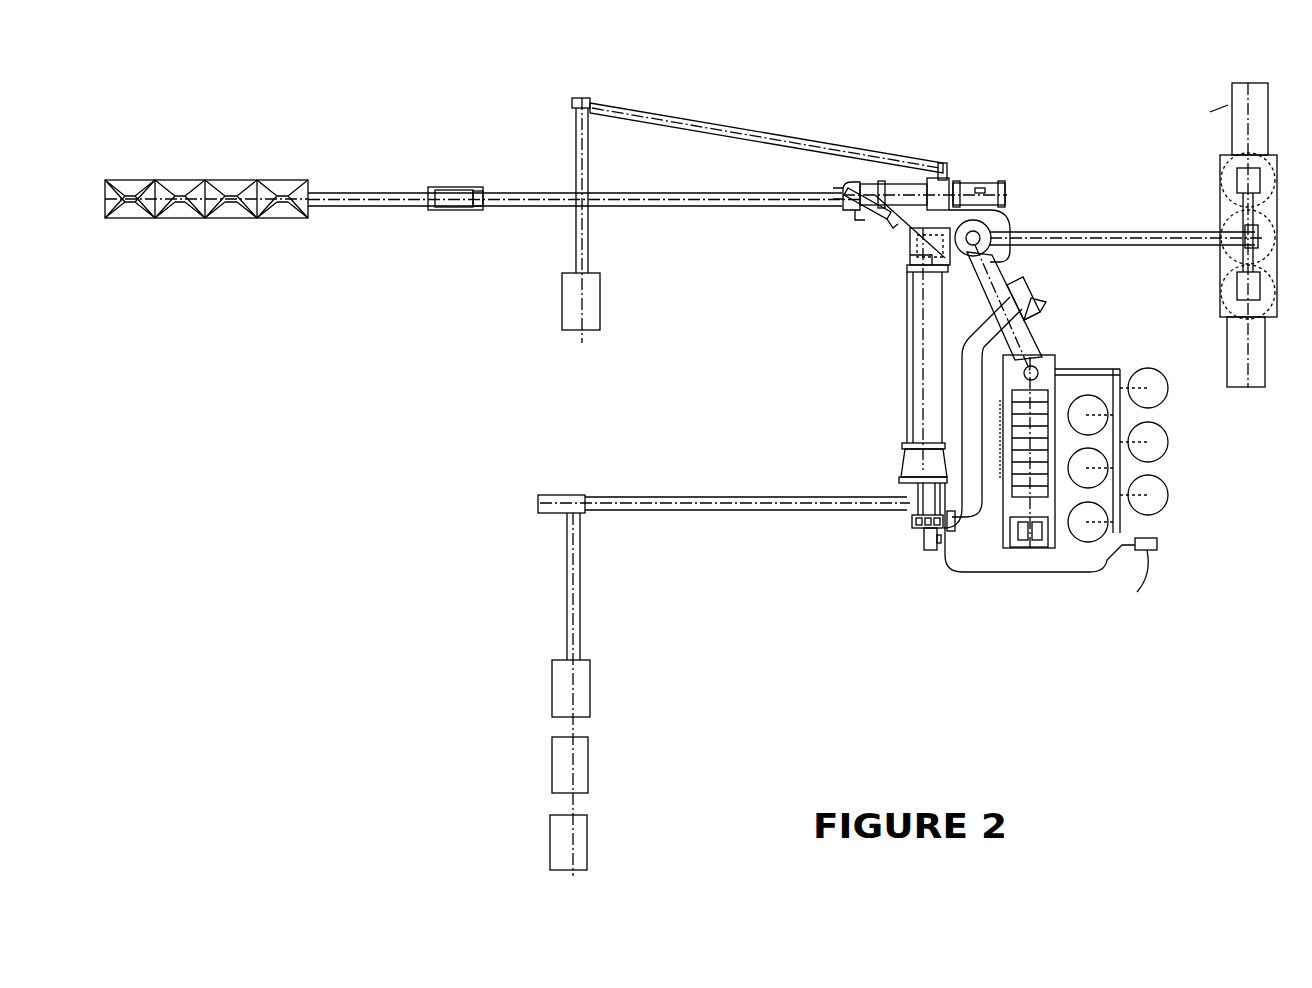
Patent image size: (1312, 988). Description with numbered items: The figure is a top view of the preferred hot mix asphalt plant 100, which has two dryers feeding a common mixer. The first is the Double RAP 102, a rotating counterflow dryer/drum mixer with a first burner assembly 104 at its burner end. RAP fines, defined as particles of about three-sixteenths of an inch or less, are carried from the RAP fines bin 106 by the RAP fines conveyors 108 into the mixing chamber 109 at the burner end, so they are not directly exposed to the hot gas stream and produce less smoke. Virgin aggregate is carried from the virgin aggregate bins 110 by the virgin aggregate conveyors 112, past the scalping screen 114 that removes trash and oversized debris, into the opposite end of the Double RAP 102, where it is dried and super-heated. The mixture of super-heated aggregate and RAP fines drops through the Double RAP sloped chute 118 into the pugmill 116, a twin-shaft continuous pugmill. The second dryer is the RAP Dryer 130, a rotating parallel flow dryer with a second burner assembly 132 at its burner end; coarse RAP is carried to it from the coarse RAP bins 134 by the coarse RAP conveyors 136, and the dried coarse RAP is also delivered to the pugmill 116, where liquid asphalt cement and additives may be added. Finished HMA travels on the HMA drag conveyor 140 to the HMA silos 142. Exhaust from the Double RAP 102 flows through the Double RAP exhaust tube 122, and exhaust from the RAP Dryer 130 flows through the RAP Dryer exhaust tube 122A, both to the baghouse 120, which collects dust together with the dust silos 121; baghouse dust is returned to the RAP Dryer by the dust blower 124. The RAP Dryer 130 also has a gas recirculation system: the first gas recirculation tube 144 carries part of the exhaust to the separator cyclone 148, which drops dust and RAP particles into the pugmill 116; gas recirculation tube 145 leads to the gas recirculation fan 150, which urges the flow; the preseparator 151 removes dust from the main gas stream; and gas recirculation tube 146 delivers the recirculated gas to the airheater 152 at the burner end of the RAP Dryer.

The hot mix asphalt plant 100 is at (985, 612).
The Double RAP 102 is at (902, 187).
The first burner assembly 104 is at (998, 185).
The RAP fines bin 106 is at (593, 302).
The RAP fines conveyors 108 is at (643, 108).
The mixing chamber 109 is at (948, 177).
The virgin aggregate bins 110 is at (232, 213).
The virgin aggregate conveyors 112 is at (358, 192).
The scalping screen 114 is at (452, 212).
The pugmill 116 is at (997, 213).
The Double RAP sloped chute 118 is at (912, 232).
The baghouse 120 is at (1052, 357).
The dust silos 121 is at (1172, 440).
The Double RAP exhaust tube 122 is at (918, 210).
The RAP Dryer exhaust tube 122A is at (958, 292).
The dust blower 124 is at (1131, 587).
The RAP Dryer 130 is at (907, 370).
The second burner assembly 132 is at (923, 552).
The coarse RAP bins 134 is at (590, 767).
The coarse RAP conveyors 136 is at (567, 577).
The HMA drag conveyor 140 is at (1182, 243).
The HMA silos 142 is at (1227, 155).
The first gas recirculation tube 144 is at (935, 270).
The gas recirculation tube 145 is at (1020, 272).
The gas recirculation tube 146 is at (962, 408).
The separator cyclone 148 is at (1003, 222).
The gas recirculation fan 150 is at (1043, 307).
The preseparator 151 is at (1245, 227).
The airheater 152 is at (915, 527).